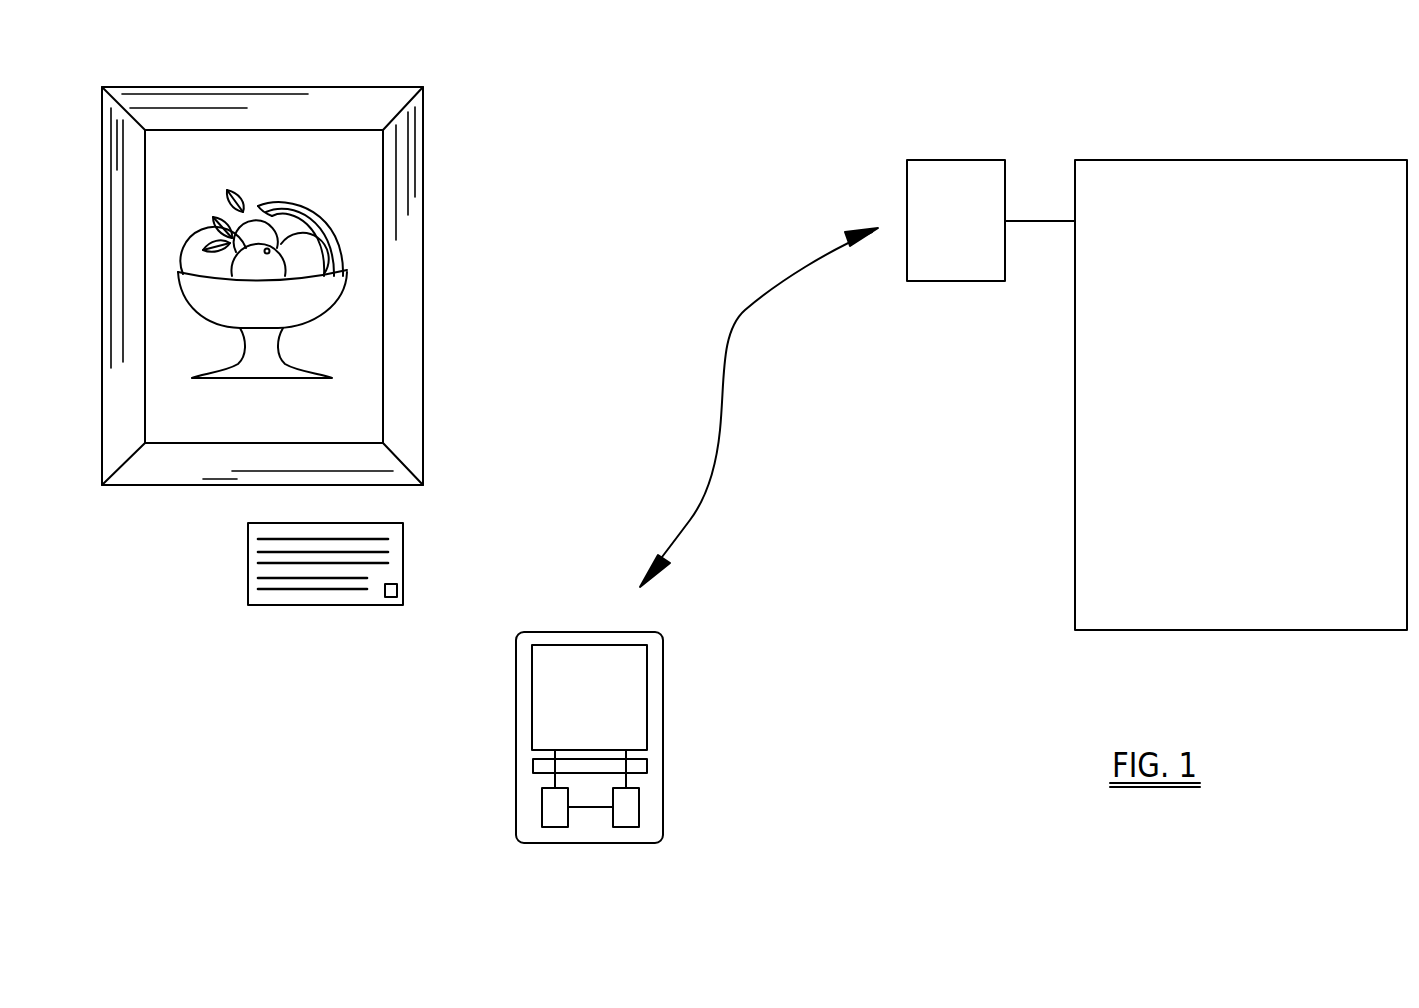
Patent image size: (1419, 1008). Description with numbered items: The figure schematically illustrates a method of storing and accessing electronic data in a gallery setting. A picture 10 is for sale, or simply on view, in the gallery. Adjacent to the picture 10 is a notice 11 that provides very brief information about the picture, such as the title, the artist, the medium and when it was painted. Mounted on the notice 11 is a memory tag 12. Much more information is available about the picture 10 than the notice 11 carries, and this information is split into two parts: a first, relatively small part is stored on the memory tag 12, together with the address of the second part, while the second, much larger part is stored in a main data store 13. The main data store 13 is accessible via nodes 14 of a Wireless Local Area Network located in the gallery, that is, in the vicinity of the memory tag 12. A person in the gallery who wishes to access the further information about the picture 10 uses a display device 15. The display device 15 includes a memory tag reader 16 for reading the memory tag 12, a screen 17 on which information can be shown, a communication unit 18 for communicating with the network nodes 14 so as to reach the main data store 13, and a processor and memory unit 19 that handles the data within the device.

The picture 10 is at (424, 165).
The notice 11 is at (248, 564).
The memory tag 12 is at (387, 598).
The main data store 13 is at (1260, 160).
The node 14 is at (944, 160).
The display device 15 is at (665, 739).
The memory tag reader 16 is at (542, 807).
The screen 17 is at (555, 662).
The communication unit 18 is at (639, 808).
The processor and memory unit 19 is at (533, 767).